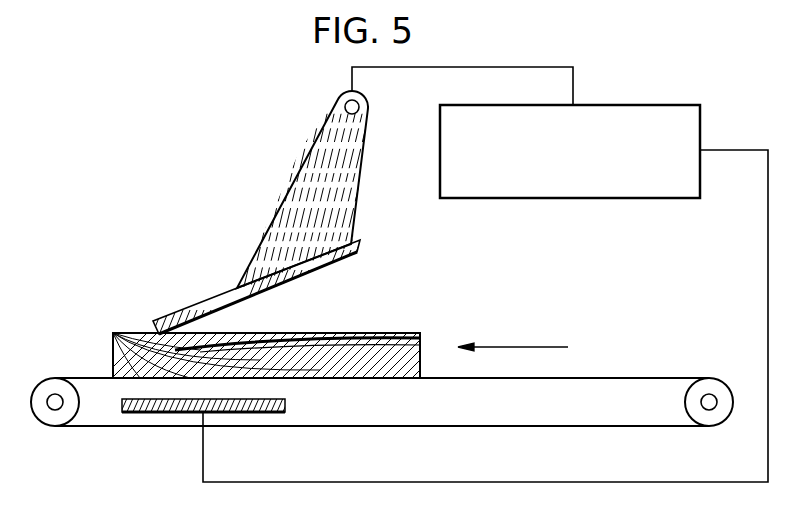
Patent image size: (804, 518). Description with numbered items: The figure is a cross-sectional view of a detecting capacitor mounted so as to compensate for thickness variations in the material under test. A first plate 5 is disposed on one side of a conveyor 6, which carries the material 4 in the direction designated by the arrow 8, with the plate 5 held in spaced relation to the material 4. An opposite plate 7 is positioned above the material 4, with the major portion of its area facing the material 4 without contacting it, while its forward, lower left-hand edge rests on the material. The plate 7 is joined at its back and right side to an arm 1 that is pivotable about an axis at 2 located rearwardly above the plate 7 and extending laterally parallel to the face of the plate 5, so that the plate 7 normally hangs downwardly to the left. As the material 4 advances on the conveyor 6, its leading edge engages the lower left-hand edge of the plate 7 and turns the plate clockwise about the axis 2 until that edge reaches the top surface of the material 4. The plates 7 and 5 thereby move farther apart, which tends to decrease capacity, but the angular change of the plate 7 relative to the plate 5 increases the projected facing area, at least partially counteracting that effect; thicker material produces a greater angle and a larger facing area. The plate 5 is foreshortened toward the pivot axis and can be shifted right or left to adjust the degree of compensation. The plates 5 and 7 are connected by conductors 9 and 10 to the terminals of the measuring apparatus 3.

The arm 1 is at (320, 189).
The pivot axis 2 is at (345, 100).
The measuring apparatus 3 is at (447, 132).
The material 4 is at (372, 333).
The first plate 5 is at (287, 405).
The conveyor 6 is at (670, 377).
The opposite plate 7 is at (206, 308).
The arrow 8 is at (522, 345).
The conductor 9 is at (437, 68).
The conductor 10 is at (768, 288).